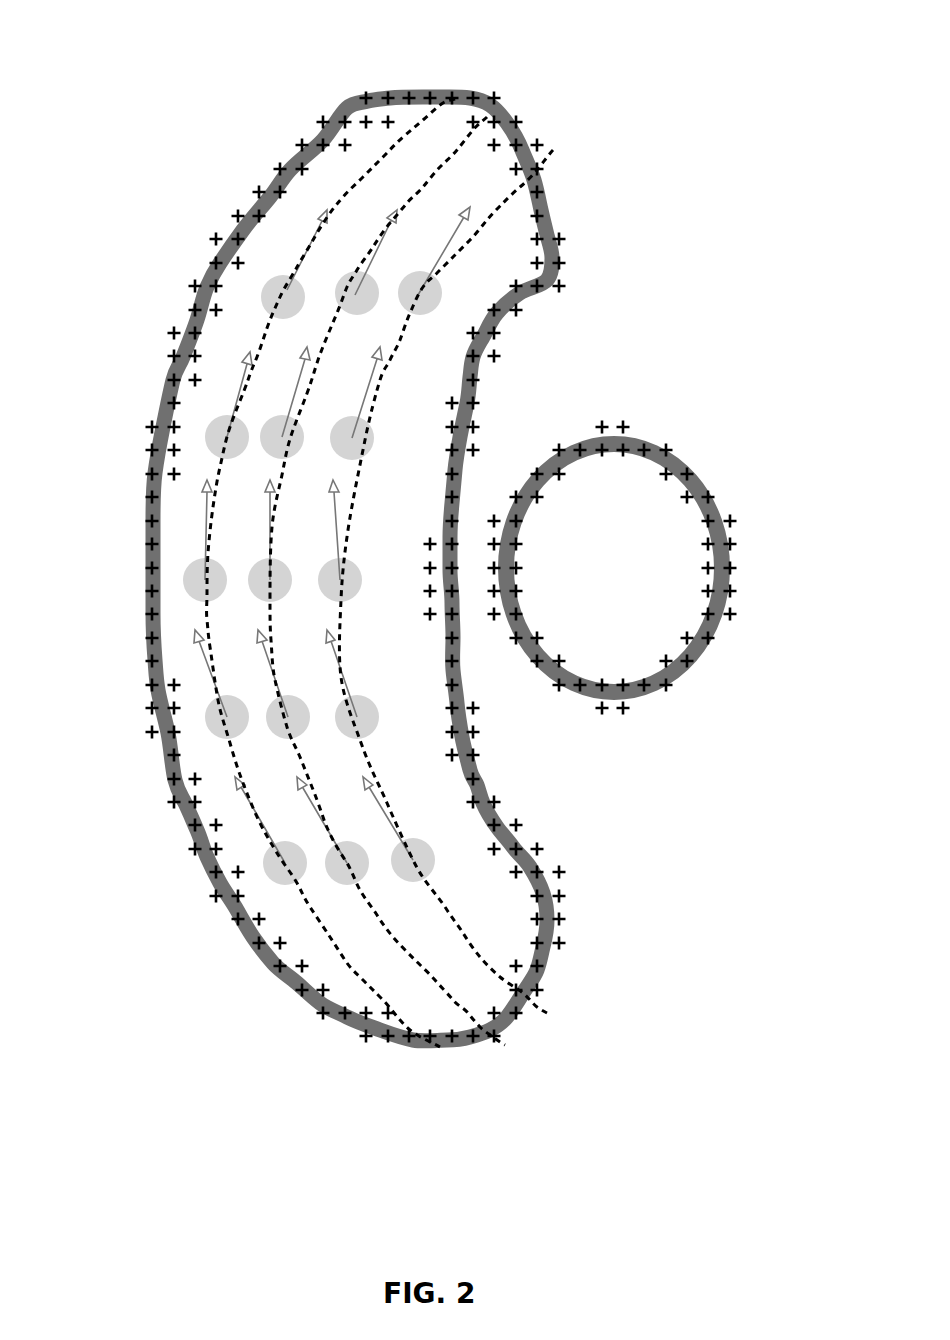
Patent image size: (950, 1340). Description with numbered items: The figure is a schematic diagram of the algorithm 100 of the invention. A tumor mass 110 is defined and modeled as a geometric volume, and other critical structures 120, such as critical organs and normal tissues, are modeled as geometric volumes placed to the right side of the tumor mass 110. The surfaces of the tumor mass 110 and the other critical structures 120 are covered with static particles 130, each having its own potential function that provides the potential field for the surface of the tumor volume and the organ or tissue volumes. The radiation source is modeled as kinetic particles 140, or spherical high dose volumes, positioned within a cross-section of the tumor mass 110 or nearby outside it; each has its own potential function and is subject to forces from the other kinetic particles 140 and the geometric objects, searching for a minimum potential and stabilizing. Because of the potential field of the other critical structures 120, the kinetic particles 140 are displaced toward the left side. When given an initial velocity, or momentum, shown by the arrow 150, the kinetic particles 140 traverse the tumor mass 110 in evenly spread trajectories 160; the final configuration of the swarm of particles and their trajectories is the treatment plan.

The algorithm 100 is at (50, 31).
The tumor mass 110 is at (540, 213).
The other critical structures 120 is at (693, 490).
The static particles 130 is at (623, 707).
The kinetic particles 140 is at (272, 292).
The arrow 150 is at (250, 802).
The trajectories 160 is at (370, 985).